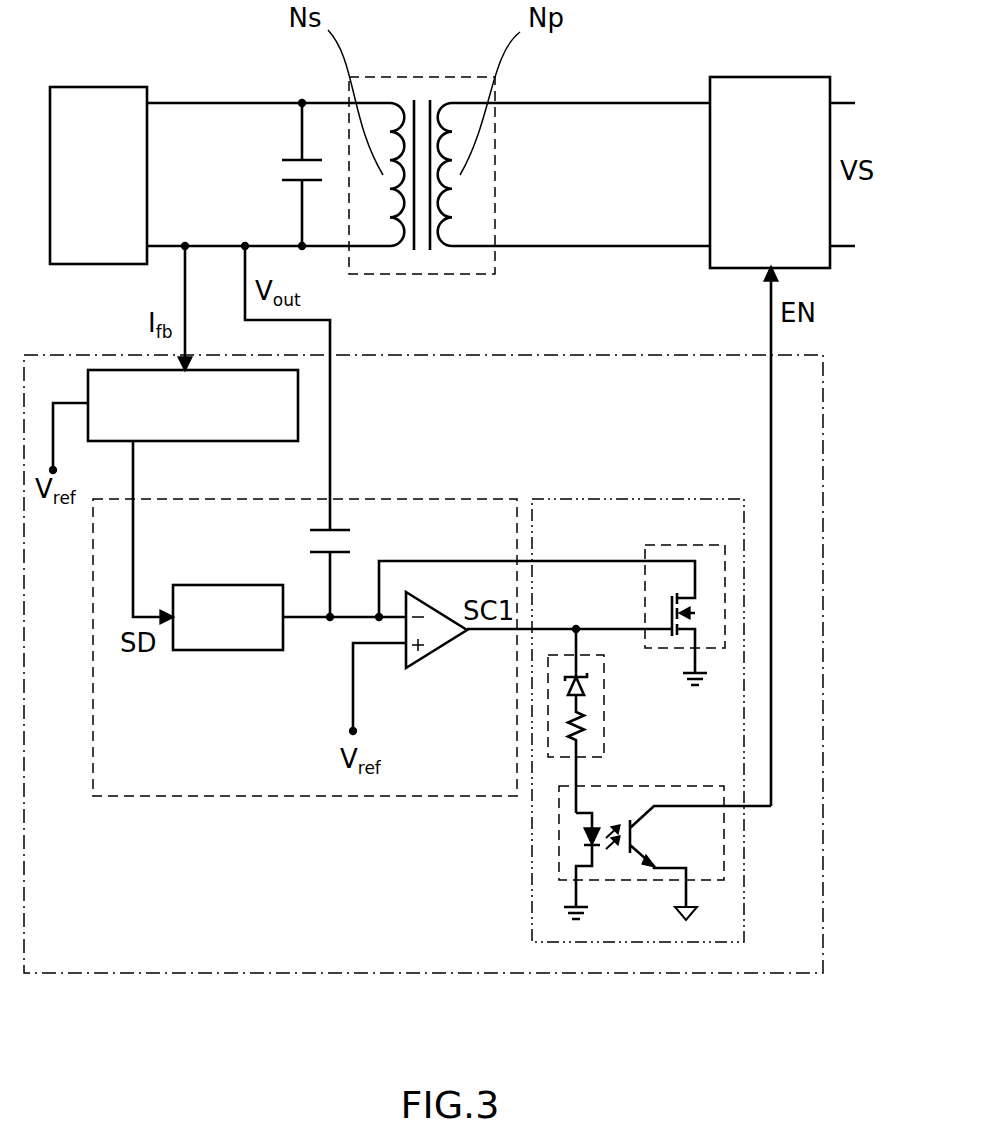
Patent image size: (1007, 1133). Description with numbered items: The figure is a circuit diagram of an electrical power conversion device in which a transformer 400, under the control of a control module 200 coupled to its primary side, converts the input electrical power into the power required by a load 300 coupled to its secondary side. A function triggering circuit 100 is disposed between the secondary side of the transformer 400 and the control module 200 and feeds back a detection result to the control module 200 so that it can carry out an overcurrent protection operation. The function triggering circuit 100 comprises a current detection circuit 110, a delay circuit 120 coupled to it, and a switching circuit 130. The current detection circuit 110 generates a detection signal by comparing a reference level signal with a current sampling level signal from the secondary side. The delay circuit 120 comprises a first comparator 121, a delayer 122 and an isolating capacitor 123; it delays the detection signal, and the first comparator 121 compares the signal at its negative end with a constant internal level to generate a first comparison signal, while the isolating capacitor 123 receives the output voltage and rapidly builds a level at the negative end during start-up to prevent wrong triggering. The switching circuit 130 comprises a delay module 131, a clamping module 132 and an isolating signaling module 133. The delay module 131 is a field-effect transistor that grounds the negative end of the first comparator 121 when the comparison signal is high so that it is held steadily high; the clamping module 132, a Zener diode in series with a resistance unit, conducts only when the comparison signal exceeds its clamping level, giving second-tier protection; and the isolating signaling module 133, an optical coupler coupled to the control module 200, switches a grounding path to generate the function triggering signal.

The function triggering circuit 100 is at (290, 975).
The current detection circuit 110 is at (94, 370).
The delay circuit 120 is at (210, 798).
The first comparator 121 is at (428, 668).
The delayer 122 is at (230, 652).
The isolating capacitor 123 is at (362, 541).
The switching circuit 130 is at (613, 499).
The delay module 131 is at (690, 545).
The clamping module 132 is at (604, 707).
The isolating signaling module 133 is at (559, 855).
The control module 200 is at (780, 77).
The load 300 is at (92, 87).
The transformer 400 is at (463, 77).